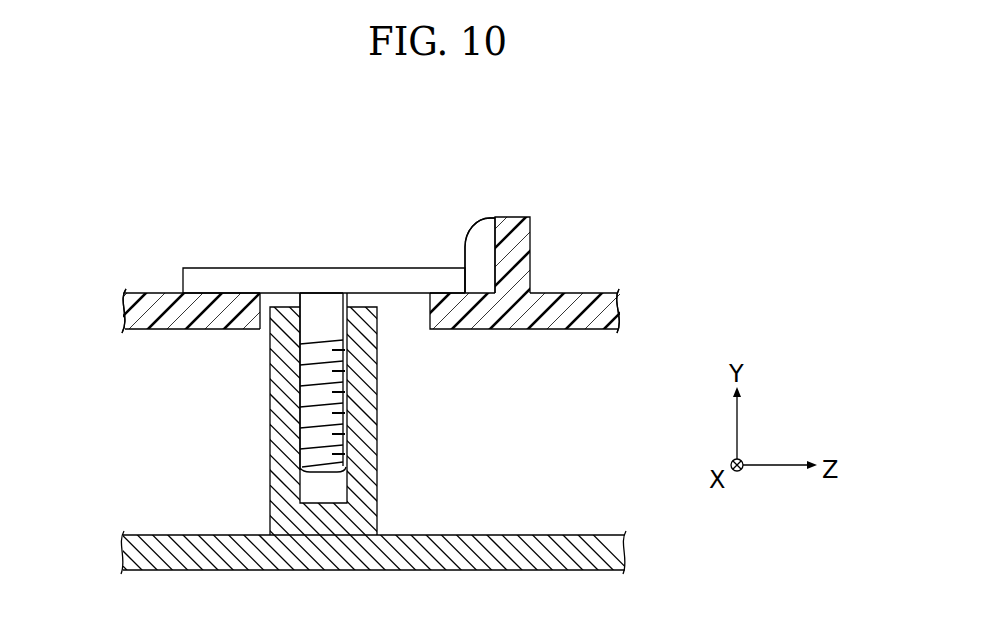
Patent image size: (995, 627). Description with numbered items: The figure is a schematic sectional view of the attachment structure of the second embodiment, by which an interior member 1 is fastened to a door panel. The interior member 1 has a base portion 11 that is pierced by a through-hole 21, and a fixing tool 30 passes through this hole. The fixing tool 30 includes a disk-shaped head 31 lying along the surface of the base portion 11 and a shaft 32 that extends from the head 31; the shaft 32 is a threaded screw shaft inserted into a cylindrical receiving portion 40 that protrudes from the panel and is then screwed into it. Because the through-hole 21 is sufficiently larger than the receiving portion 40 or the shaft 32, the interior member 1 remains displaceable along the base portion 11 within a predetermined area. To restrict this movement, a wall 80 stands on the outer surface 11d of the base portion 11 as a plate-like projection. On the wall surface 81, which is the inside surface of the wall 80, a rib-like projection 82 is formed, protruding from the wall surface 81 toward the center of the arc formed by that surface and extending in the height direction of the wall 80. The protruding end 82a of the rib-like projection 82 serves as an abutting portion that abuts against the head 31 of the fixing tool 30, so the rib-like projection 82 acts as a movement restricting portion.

The interior member 1 is at (645, 306).
The base portion 11 is at (122, 307).
The outer surface 11d is at (125, 293).
The through-hole 21 is at (273, 293).
The fixing tool 30 is at (478, 346).
The head 31 is at (402, 293).
The shaft 32 is at (333, 323).
The receiving portion 40 is at (270, 425).
The wall 80 is at (513, 217).
The wall surface 81 is at (492, 238).
The rib-like projection 82 is at (465, 248).
The protruding end 82a is at (480, 255).